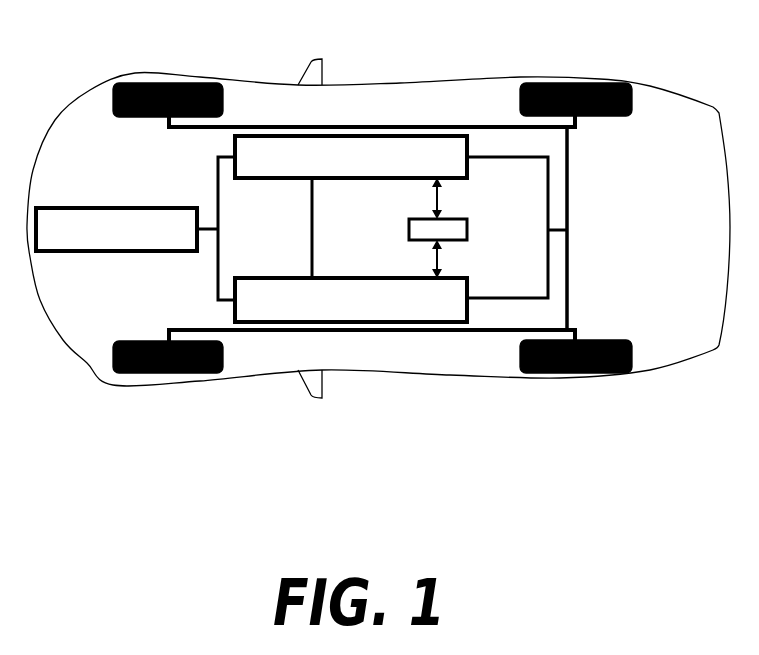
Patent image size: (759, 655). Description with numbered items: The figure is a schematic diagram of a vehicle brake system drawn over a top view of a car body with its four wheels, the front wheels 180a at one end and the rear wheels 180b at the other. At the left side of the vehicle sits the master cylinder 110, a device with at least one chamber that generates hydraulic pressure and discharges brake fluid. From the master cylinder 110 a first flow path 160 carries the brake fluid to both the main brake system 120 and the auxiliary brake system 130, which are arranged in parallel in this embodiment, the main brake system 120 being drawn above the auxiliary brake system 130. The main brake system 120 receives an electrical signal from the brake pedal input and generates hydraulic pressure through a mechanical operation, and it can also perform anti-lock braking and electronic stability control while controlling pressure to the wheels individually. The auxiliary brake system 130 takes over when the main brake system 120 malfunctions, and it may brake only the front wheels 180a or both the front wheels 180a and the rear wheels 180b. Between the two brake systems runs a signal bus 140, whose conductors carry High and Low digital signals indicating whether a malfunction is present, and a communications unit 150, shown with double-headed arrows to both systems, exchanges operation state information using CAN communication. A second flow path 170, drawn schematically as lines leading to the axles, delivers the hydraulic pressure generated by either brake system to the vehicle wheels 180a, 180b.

The master cylinder 110 is at (98, 207).
The main brake system 120 is at (468, 170).
The auxiliary brake system 130 is at (468, 288).
The signal bus 140 is at (312, 215).
The communications unit 150 is at (468, 232).
The first flow path 160 is at (218, 180).
The second flow path 170 is at (570, 180).
The front wheels 180a is at (185, 82).
The rear wheels 180b is at (593, 83).